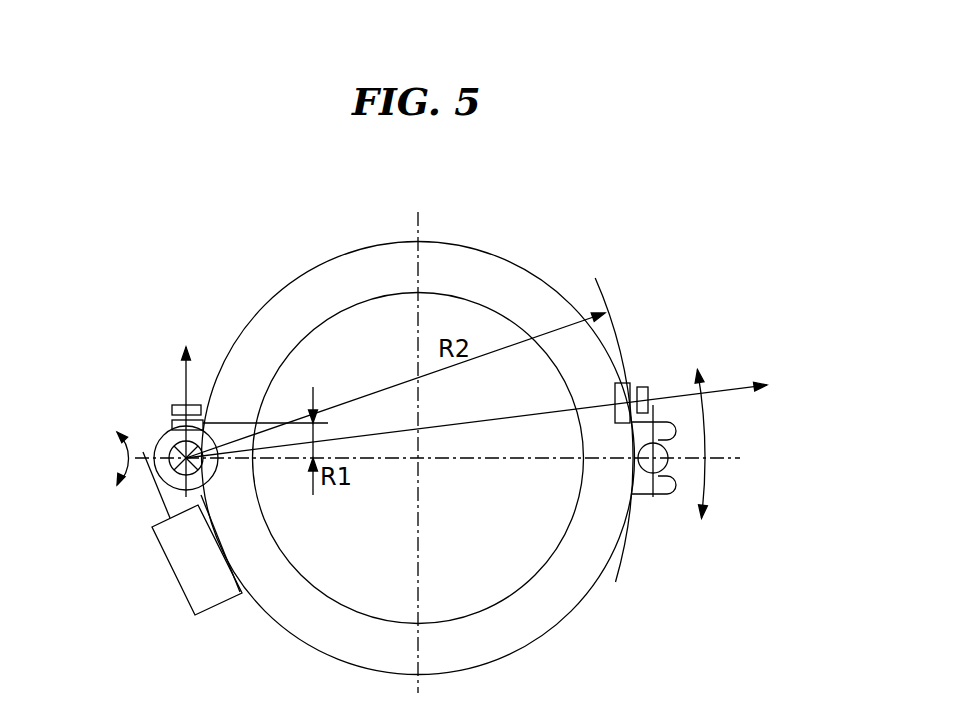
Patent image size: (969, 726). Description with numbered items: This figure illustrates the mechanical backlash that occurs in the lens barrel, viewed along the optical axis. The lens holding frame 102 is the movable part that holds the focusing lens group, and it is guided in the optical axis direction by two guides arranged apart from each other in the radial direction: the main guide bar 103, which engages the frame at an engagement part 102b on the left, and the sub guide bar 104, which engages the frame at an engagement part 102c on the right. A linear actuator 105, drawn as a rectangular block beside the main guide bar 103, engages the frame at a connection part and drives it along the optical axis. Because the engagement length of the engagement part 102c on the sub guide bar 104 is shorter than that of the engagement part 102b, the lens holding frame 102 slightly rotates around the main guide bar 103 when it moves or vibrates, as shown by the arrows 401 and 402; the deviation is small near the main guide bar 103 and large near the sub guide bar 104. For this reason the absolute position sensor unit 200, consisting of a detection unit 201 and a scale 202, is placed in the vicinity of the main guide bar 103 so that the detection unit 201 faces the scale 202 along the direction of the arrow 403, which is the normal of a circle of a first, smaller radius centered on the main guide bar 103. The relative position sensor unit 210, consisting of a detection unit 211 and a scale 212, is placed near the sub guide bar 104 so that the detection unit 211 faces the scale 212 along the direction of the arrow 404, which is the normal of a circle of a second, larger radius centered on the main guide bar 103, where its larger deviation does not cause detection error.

The lens holding frame 102 is at (490, 278).
The engagement part 102b is at (153, 490).
The engagement part 102c is at (668, 488).
The main guide bar 103 is at (172, 478).
The sub guide bar 104 is at (662, 460).
The linear actuator 105 is at (202, 582).
The absolute position sensor unit 200 is at (106, 395).
The detection unit 201 is at (172, 408).
The scale 202 is at (170, 426).
The relative position sensor unit 210 is at (679, 343).
The detection unit 211 is at (642, 387).
The scale 212 is at (625, 383).
The arrow 401 is at (110, 458).
The arrow 402 is at (712, 443).
The arrow 403 is at (182, 372).
The arrow 404 is at (727, 385).